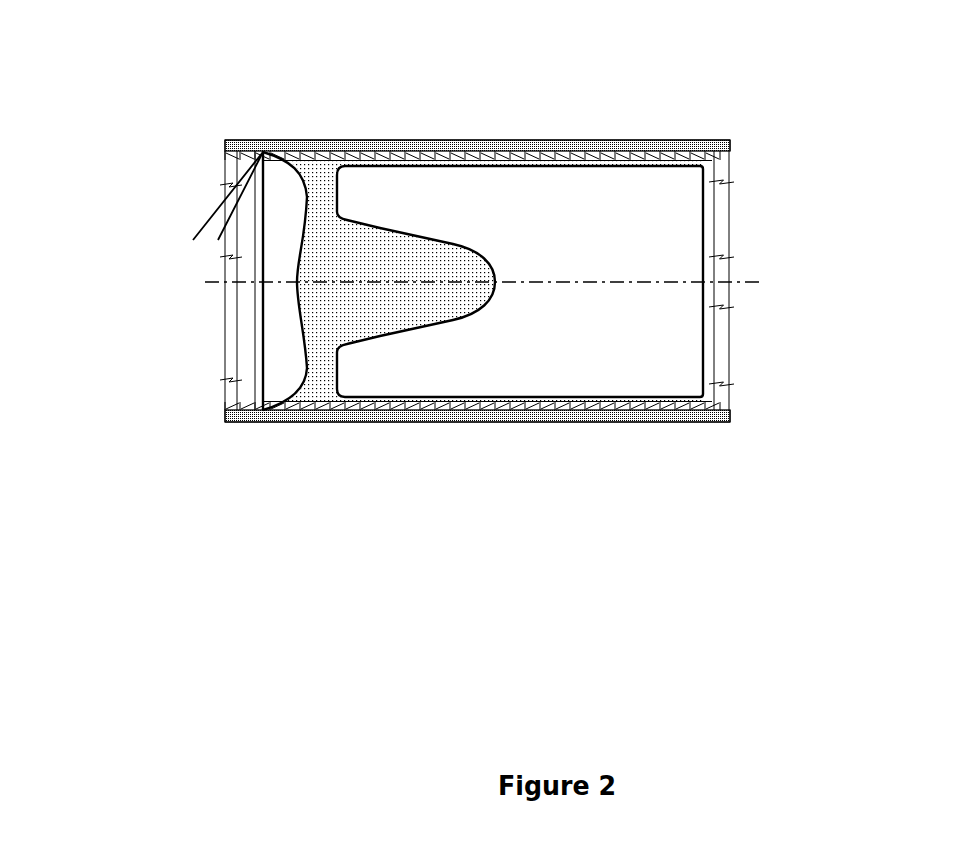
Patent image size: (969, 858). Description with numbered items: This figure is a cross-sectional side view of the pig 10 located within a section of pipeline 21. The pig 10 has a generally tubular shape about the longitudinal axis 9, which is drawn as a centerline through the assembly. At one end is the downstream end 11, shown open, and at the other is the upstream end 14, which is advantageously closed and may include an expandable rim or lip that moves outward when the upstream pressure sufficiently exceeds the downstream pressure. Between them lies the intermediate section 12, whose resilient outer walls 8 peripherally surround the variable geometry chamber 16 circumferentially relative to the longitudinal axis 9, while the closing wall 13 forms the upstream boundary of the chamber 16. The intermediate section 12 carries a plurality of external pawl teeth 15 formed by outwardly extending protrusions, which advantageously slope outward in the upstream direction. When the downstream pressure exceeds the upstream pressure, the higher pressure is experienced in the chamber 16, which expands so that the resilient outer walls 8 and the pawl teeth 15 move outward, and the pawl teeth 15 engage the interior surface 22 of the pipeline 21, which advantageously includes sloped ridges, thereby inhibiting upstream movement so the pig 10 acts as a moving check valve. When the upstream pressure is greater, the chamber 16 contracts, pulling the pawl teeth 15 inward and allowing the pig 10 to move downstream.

The resilient outer walls 8 is at (637, 158).
The longitudinal axis 9 is at (745, 283).
The pig 10 is at (688, 158).
The downstream end 11 is at (703, 246).
The intermediate section 12 is at (495, 158).
The closing wall 13 is at (297, 298).
The upstream end 14 is at (274, 152).
The pawl teeth 15 is at (410, 158).
The variable geometry chamber 16 is at (520, 281).
The pipeline 21 is at (594, 143).
The interior surface 22 is at (191, 240).